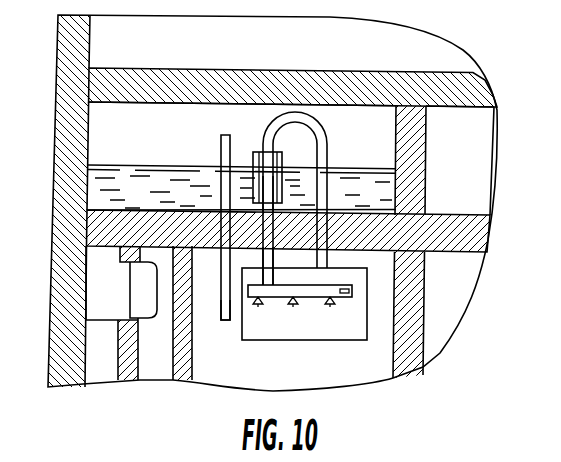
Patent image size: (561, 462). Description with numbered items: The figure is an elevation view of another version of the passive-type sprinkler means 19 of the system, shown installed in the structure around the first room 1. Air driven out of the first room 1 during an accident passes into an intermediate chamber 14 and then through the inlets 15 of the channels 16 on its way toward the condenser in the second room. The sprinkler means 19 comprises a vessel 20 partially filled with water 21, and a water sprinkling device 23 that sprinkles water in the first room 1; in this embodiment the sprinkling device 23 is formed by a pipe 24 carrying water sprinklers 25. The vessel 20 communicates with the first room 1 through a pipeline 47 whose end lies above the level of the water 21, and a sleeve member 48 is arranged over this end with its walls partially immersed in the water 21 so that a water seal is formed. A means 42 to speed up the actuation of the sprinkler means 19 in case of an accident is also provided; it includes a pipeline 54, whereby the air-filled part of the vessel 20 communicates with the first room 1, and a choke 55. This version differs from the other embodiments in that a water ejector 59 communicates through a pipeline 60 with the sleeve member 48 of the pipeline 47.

The first room 1 is at (366, 360).
The intermediate chamber 14 is at (158, 363).
The inlets of channels 15 is at (98, 318).
The channels 16 is at (106, 371).
The passive-type sprinkler means 19 is at (110, 124).
The vessel 20 is at (85, 211).
The water 21 is at (87, 174).
The water sprinkling device 23 is at (278, 314).
The pipe 24 is at (351, 293).
The water sprinklers 25 is at (331, 302).
The means to speed up actuation 42 is at (214, 147).
The pipeline 47 is at (271, 213).
The sleeve member 48 is at (264, 152).
The pipeline 54 is at (216, 312).
The choke 55 is at (261, 258).
The water ejector 59 is at (366, 271).
The pipeline 60 is at (324, 161).